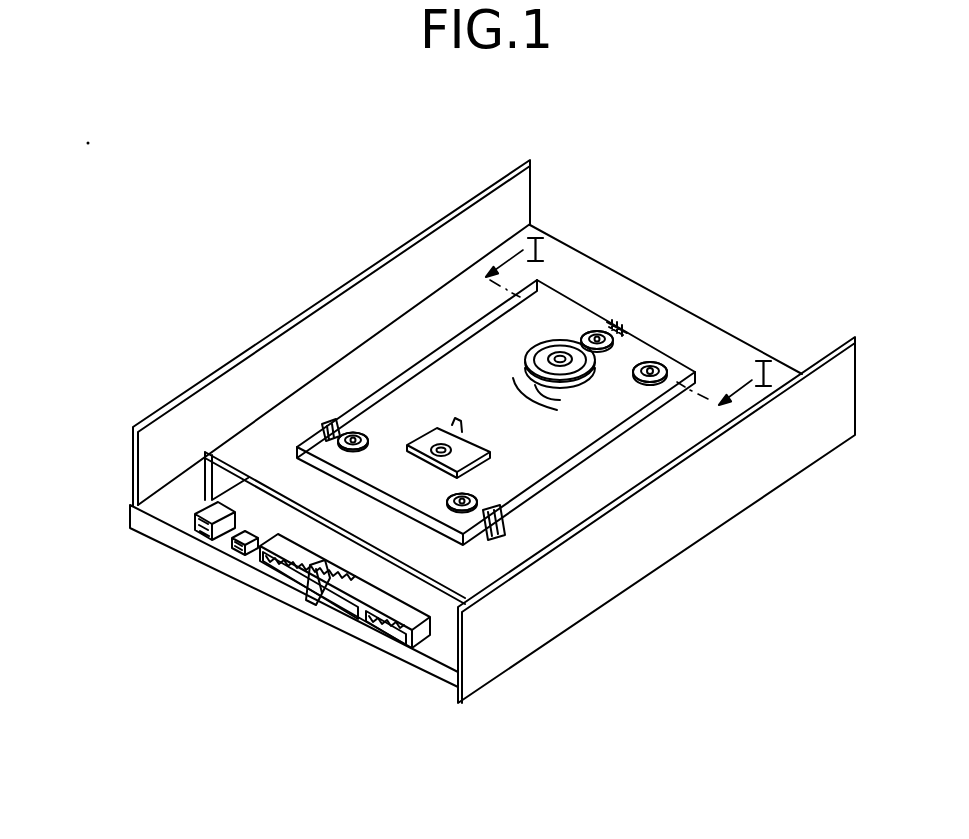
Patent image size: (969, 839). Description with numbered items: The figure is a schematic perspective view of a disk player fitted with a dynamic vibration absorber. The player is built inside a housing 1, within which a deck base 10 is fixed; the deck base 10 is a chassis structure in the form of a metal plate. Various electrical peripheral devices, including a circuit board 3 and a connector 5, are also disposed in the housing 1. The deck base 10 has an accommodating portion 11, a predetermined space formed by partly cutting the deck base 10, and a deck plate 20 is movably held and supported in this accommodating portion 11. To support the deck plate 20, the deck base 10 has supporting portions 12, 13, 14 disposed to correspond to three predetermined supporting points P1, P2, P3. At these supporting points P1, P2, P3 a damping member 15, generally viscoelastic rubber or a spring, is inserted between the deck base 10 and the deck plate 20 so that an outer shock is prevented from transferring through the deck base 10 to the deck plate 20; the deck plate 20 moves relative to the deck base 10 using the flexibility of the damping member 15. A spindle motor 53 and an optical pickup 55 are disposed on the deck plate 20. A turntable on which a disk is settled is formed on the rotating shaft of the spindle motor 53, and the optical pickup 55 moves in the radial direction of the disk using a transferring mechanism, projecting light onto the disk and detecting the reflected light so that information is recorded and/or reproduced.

The housing 1 is at (150, 399).
The circuit board 3 is at (437, 617).
The connector 5 is at (333, 600).
The deck base 10 is at (719, 348).
The accommodating portion 11 is at (552, 328).
The supporting portion 12 is at (650, 360).
The supporting portion 13 is at (352, 430).
The supporting portion 14 is at (512, 540).
The damping member 15 is at (338, 438).
The deck plate 20 is at (600, 336).
The spindle motor 53 is at (563, 393).
The optical pickup 55 is at (443, 421).
The supporting point P1 is at (628, 334).
The supporting point P2 is at (357, 430).
The supporting point P3 is at (484, 508).